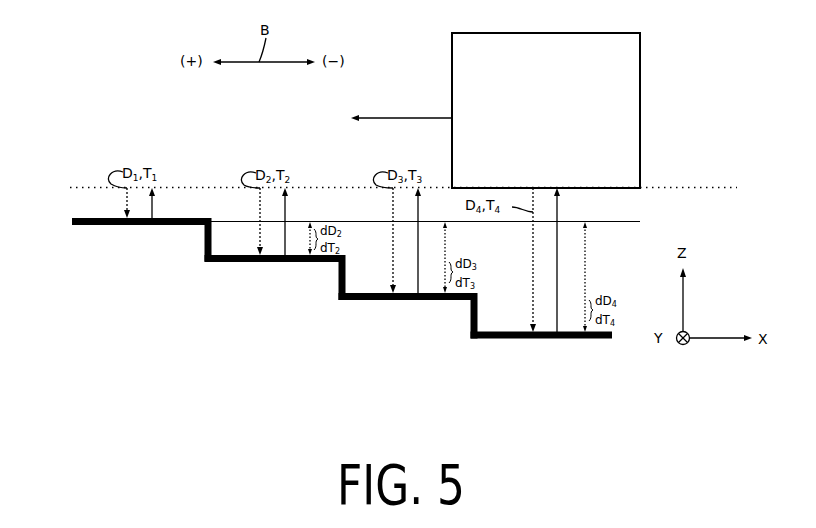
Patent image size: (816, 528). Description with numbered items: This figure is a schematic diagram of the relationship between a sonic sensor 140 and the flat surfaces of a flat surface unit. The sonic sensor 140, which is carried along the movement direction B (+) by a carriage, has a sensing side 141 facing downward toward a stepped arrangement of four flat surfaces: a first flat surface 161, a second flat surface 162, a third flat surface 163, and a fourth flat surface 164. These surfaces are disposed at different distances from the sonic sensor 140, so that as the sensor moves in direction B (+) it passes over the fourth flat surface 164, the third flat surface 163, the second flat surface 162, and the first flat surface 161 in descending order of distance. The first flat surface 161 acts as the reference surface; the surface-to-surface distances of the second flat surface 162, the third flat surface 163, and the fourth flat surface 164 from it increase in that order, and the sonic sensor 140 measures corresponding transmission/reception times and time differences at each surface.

The sonic sensor 140 is at (641, 62).
The surface of member 140 141 is at (613, 197).
The first flat surface 161 is at (84, 218).
The second flat surface 162 is at (234, 257).
The third flat surface 163 is at (370, 294).
The fourth flat surface 164 is at (500, 332).